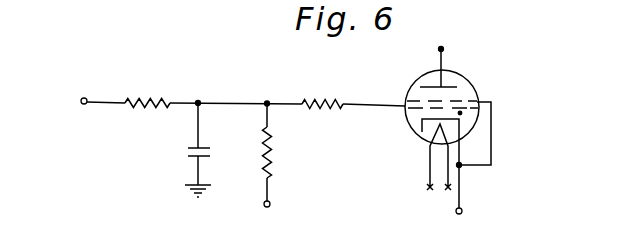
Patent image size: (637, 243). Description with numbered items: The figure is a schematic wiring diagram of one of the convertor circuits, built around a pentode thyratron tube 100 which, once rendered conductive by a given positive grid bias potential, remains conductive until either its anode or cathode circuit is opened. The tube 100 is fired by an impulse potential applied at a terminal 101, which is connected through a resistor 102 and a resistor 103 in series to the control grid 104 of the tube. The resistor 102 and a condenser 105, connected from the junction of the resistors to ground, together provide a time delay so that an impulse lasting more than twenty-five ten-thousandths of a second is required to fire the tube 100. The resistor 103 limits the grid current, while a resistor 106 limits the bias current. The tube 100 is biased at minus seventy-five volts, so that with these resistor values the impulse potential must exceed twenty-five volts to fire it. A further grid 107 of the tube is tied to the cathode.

The pentode thyratron tube 100 is at (411, 128).
The terminal 101 is at (88, 96).
The resistor 102 is at (166, 96).
The resistor 103 is at (322, 98).
The control grid 104 is at (422, 109).
The condenser 105 is at (188, 148).
The resistor 106 is at (272, 152).
The grid 107 is at (452, 102).